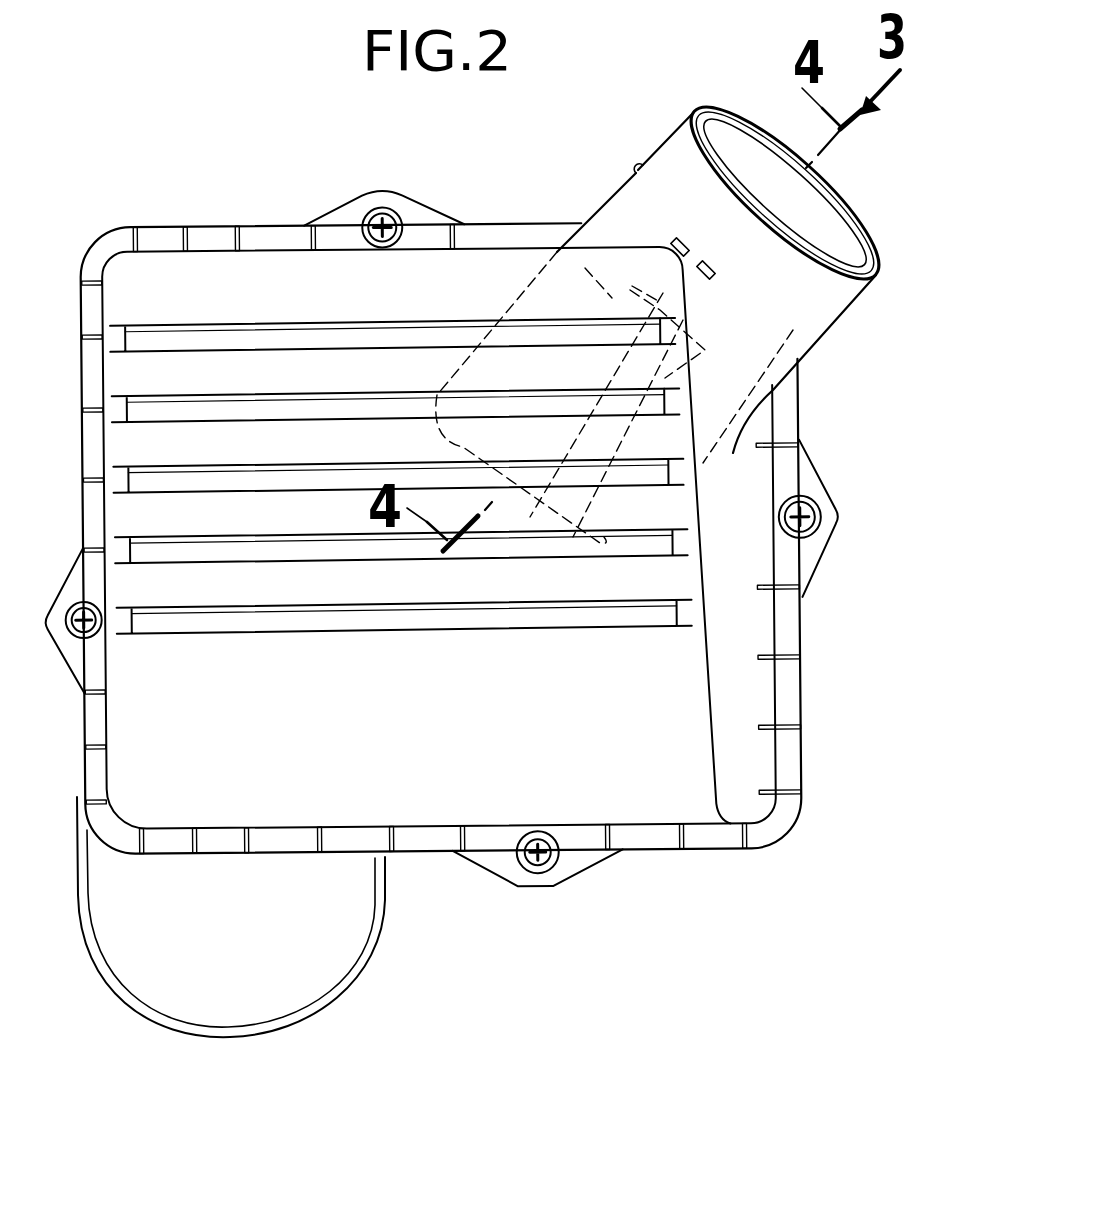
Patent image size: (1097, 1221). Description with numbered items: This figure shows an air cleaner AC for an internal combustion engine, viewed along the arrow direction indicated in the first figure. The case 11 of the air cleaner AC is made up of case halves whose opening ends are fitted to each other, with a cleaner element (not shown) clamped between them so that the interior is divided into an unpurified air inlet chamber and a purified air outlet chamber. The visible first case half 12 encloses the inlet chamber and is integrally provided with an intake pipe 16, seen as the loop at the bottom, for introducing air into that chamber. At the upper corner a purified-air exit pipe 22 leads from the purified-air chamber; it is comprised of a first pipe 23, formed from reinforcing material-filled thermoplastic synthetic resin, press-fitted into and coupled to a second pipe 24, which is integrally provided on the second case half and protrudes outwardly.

The air cleaner AC is at (72, 482).
The case 11 is at (432, 722).
The first case half 12 is at (157, 273).
The intake pipe 16 is at (337, 953).
The purified-air exit pipe 22 is at (640, 112).
The first pipe 23 is at (706, 110).
The second pipe 24 is at (660, 150).